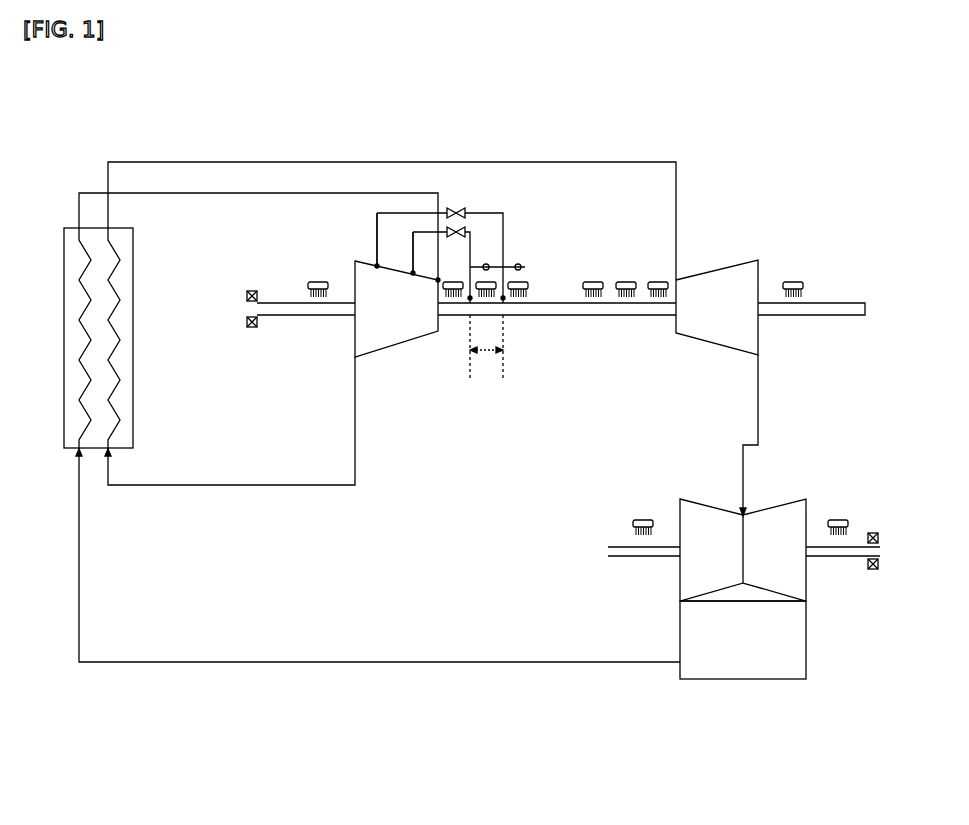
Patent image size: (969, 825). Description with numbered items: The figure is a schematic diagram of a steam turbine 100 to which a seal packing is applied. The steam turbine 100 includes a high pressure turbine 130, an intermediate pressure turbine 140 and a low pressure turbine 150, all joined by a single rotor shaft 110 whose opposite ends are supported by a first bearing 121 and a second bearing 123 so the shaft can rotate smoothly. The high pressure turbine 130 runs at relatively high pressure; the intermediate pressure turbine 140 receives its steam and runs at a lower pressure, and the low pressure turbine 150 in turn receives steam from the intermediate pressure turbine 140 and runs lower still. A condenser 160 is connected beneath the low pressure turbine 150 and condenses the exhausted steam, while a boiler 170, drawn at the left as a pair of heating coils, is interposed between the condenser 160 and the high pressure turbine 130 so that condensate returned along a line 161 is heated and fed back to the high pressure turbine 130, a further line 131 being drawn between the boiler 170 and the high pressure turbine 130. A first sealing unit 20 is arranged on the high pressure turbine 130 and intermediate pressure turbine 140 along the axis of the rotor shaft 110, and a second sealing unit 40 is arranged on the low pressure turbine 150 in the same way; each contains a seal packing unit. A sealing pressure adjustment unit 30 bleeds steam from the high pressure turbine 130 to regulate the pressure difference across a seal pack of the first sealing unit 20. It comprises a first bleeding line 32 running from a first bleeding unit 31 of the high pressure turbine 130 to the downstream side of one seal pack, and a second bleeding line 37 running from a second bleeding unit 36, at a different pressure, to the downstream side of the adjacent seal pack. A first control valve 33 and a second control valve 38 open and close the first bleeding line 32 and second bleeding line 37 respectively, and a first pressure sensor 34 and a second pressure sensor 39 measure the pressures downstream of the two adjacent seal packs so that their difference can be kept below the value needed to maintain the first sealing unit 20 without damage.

The steam turbine 100 is at (905, 137).
The rotor shaft 110 is at (840, 303).
The first bearing 121 is at (248, 292).
The second bearing 123 is at (878, 536).
The high pressure turbine 130 is at (347, 328).
The reheat pipe 131 is at (193, 487).
The intermediate pressure turbine 140 is at (718, 268).
The low pressure turbine 150 is at (780, 500).
The condenser 160 is at (808, 642).
The condensate pipe 161 is at (255, 664).
The boiler 170 is at (64, 390).
The first sealing unit 20 is at (640, 272).
The sealing pressure adjustment unit 30 is at (490, 192).
The first bleeding unit 31 is at (413, 276).
The first bleeding line 32 is at (470, 245).
The first control valve 33 is at (462, 228).
The first pressure sensor 34 is at (489, 271).
The second bleeding unit 36 is at (377, 270).
The second bleeding line 37 is at (503, 222).
The second control valve 38 is at (456, 208).
The second pressure sensor 39 is at (521, 268).
The second sealing unit 40 is at (845, 500).